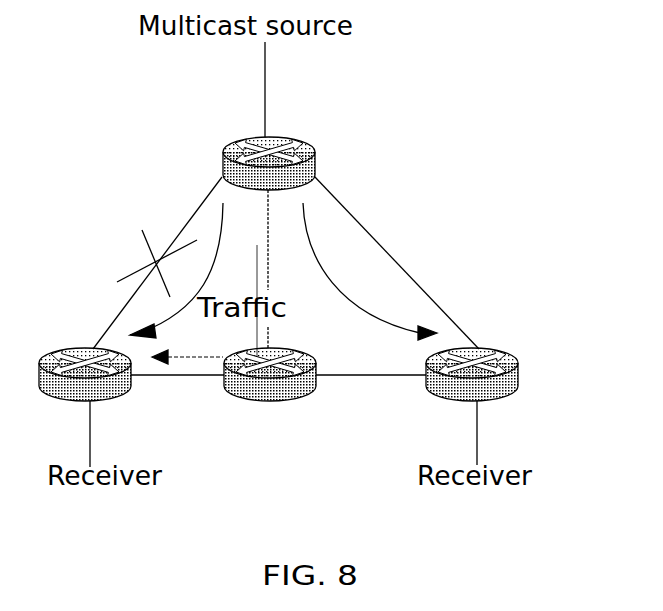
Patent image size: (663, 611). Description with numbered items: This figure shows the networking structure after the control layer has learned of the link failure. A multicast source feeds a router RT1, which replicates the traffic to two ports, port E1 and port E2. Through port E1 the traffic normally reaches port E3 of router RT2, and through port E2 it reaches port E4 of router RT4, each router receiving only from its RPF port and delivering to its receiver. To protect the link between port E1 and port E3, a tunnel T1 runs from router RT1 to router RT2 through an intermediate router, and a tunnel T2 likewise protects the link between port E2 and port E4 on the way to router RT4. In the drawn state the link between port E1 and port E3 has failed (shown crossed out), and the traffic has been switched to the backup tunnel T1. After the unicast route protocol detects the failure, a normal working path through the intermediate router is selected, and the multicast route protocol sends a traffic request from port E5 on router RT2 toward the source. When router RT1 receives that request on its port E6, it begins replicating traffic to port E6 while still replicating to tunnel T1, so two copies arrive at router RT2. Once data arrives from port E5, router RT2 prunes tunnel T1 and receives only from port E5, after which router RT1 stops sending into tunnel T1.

The router RT1 is at (275, 142).
The router RT2 is at (114, 392).
The router RT4 is at (502, 391).
The port E1 is at (157, 253).
The port E2 is at (396, 253).
The port E3 is at (85, 347).
The port E4 is at (472, 347).
The port E5 is at (112, 434).
The port E6 is at (280, 273).
The tunnel T1 is at (196, 268).
The tunnel T2 is at (370, 281).